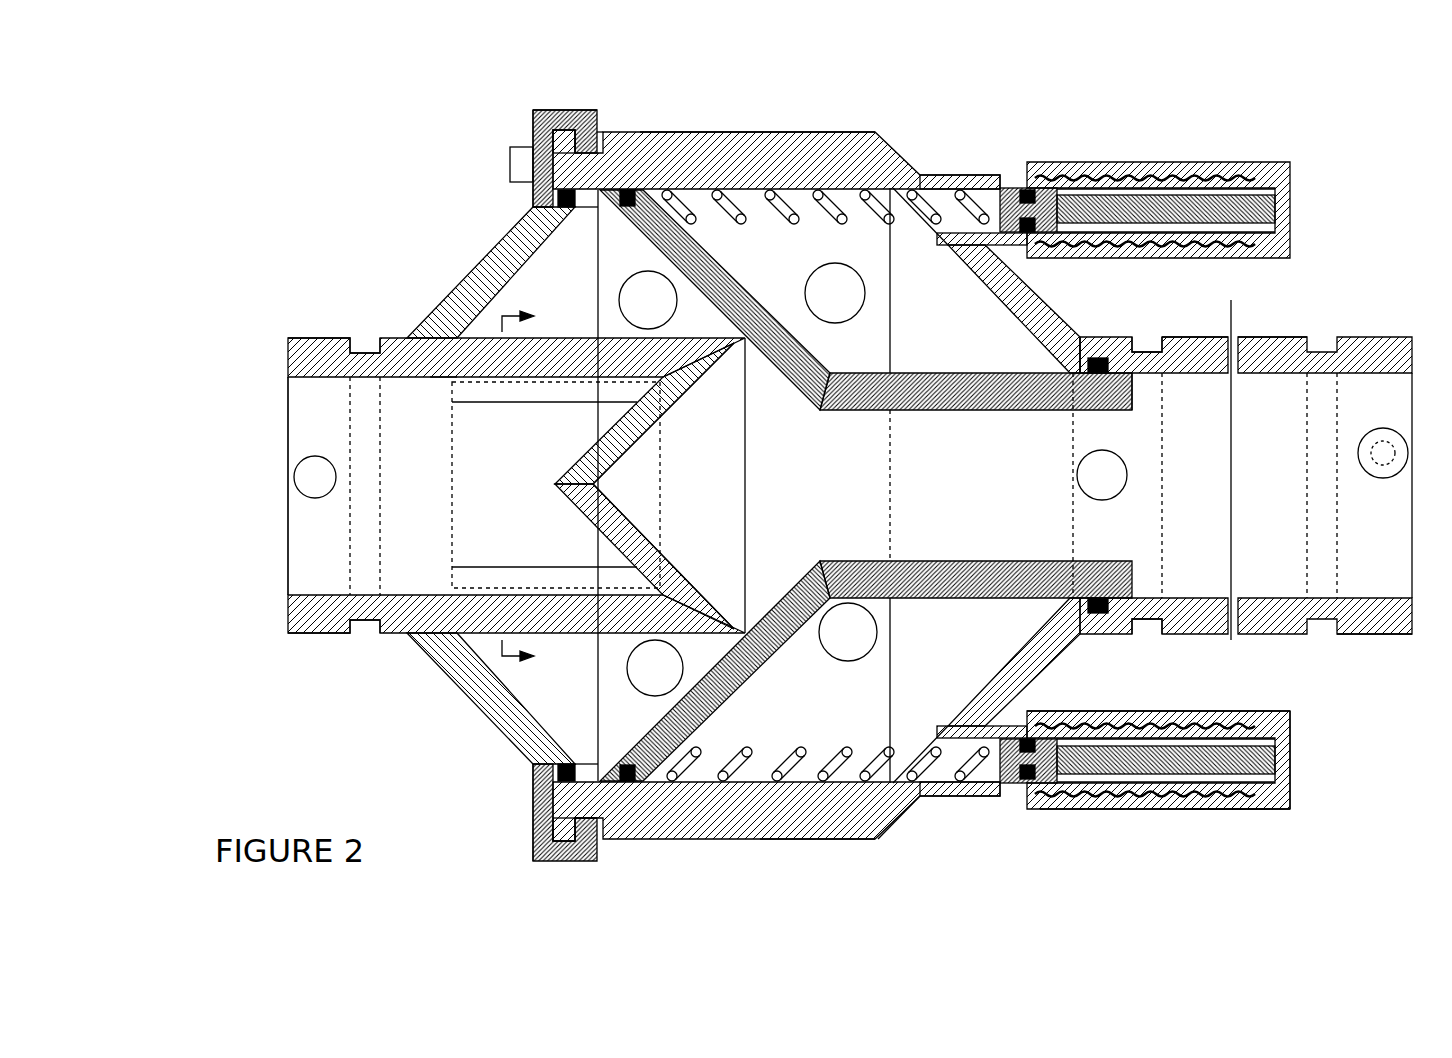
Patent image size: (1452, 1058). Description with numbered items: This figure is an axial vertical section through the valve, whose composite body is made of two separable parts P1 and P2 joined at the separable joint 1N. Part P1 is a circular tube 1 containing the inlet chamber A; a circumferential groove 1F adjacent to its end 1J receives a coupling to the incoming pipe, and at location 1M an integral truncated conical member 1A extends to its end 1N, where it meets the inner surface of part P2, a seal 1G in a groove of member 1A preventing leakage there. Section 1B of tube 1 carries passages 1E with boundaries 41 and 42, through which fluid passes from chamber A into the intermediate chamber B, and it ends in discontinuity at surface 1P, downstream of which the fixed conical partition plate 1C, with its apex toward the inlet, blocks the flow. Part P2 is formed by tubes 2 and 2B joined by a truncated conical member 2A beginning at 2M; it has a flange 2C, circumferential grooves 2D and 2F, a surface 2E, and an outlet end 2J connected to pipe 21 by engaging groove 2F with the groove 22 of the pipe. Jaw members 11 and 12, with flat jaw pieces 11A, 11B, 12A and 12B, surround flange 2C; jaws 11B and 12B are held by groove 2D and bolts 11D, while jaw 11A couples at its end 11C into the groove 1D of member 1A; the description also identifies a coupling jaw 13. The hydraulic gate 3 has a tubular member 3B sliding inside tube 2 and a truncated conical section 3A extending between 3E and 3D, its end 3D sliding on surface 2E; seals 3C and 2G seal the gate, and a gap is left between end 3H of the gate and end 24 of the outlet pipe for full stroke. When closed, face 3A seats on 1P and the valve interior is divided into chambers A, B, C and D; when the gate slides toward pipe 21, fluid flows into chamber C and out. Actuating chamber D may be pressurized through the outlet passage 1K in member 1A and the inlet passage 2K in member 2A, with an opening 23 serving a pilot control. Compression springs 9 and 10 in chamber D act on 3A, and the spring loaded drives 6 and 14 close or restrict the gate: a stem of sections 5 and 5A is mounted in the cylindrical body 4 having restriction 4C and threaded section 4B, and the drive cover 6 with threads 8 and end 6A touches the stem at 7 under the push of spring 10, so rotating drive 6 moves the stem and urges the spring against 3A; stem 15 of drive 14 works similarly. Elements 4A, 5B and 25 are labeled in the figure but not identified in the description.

The circular tube 1 is at (292, 602).
The truncated conical member 1A is at (475, 678).
The section of tube 1B is at (600, 650).
The fixed partition plate 1C is at (672, 420).
The circumferential groove 1D is at (495, 265).
The passages 1E is at (568, 563).
The circumferential groove 1F is at (360, 350).
The seal 1G is at (575, 212).
The end of part P1 1J is at (290, 345).
The outlet passage 1K is at (440, 395).
The location 1M is at (440, 378).
The separable joint 1N is at (612, 140).
The end surface 1P is at (760, 357).
The outlet tube 2 is at (1210, 598).
The truncated conical member 2A is at (1003, 302).
The tube 2B is at (830, 132).
The circumferential flange 2C is at (540, 112).
The circumferential groove 2D is at (643, 158).
The surface 2E is at (718, 132).
The circumferential groove 2F is at (1165, 335).
The seal 2G is at (1085, 365).
The outlet end 2J is at (1235, 320).
The inlet passage 2K is at (1080, 328).
The location 2M is at (1095, 352).
The hydraulic gate 3 is at (885, 418).
The truncated conical section 3A is at (660, 265).
The tubular member 3B is at (1075, 470).
The seal 3C is at (600, 763).
The end of conical section 3D is at (690, 160).
The end of conical section 3E is at (845, 373).
The end of gate 3H is at (1135, 382).
The cylindrical body 4 is at (960, 797).
The bend 4A is at (925, 797).
The threaded section 4B is at (1203, 805).
The restriction 4C is at (1238, 805).
The stem section 5 is at (1040, 848).
The stem section 5A is at (1097, 805).
The seal ring 5B is at (1013, 780).
The drive cover 6 is at (1210, 712).
The end of drive cover 6A is at (1290, 748).
The contact point 7 is at (1290, 762).
The threads 8 is at (1150, 712).
The compression spring 9 is at (795, 222).
The compression spring 10 is at (848, 750).
The jaw member 11 is at (533, 125).
The flat jaw piece 11A is at (533, 142).
The flat jaw piece 11B is at (585, 110).
The end of jaw 11C is at (540, 208).
The pin or bolt 11D is at (510, 165).
The jaw member 12 is at (537, 836).
The flat jaw piece 12A is at (538, 818).
The flat jaw piece 12B is at (582, 842).
The coupling jaw 13 is at (960, 175).
The spring loaded drive 14 is at (1140, 162).
The stem 15 is at (1240, 205).
The pipe 21 is at (1370, 597).
The circumferential groove 22 is at (1340, 335).
The opening 23 is at (1367, 460).
The end of pipe 24 is at (1240, 613).
The flange 25 is at (1245, 335).
The passage boundary 41 is at (565, 403).
The passage boundary 42 is at (500, 565).
The inlet chamber A is at (315, 477).
The intermediate chamber B is at (651, 483).
The outlet chamber C is at (1102, 475).
The actuating chamber D is at (841, 462).
The first valve body part P1 is at (470, 735).
The second valve body part P2 is at (860, 145).